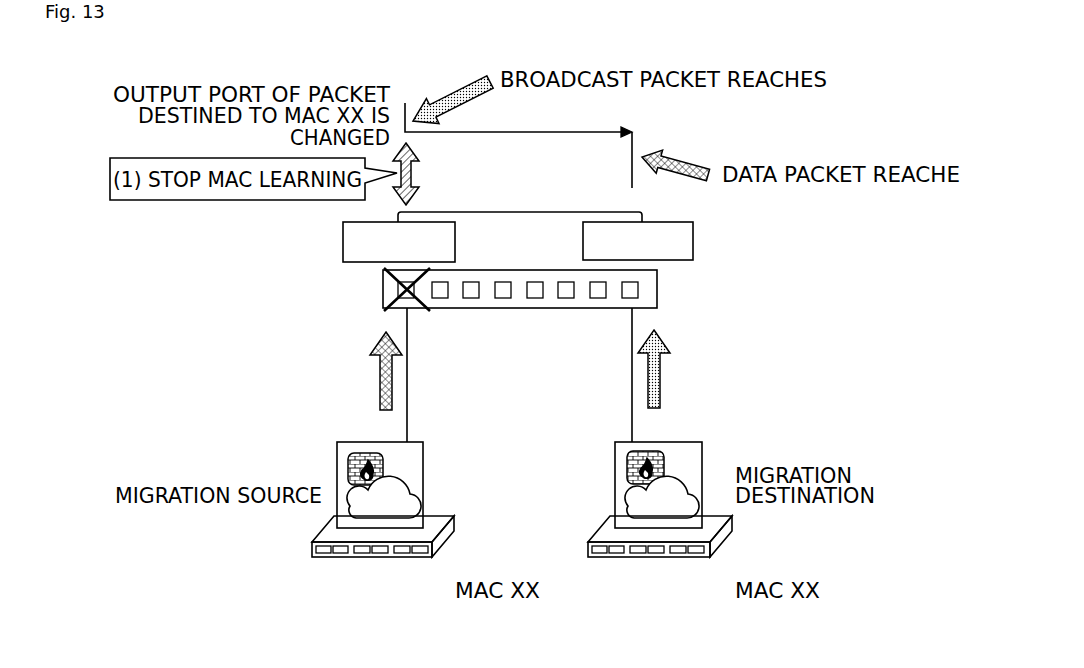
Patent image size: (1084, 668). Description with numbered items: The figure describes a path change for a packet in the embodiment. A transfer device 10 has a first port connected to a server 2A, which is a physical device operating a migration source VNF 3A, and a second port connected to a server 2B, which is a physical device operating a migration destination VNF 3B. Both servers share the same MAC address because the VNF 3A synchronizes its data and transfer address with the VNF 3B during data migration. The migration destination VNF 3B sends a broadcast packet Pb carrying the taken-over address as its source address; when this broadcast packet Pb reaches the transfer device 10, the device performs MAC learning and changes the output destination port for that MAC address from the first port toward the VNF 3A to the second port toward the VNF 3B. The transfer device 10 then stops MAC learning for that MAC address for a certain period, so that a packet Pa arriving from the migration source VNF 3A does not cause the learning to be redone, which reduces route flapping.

The transfer device 10 is at (657, 289).
The server 2A is at (440, 548).
The server 2B is at (718, 548).
The VNF 3A is at (423, 470).
The VNF 3B is at (615, 470).
The packet Pa is at (379, 373).
The broadcast packet Pb is at (661, 372).